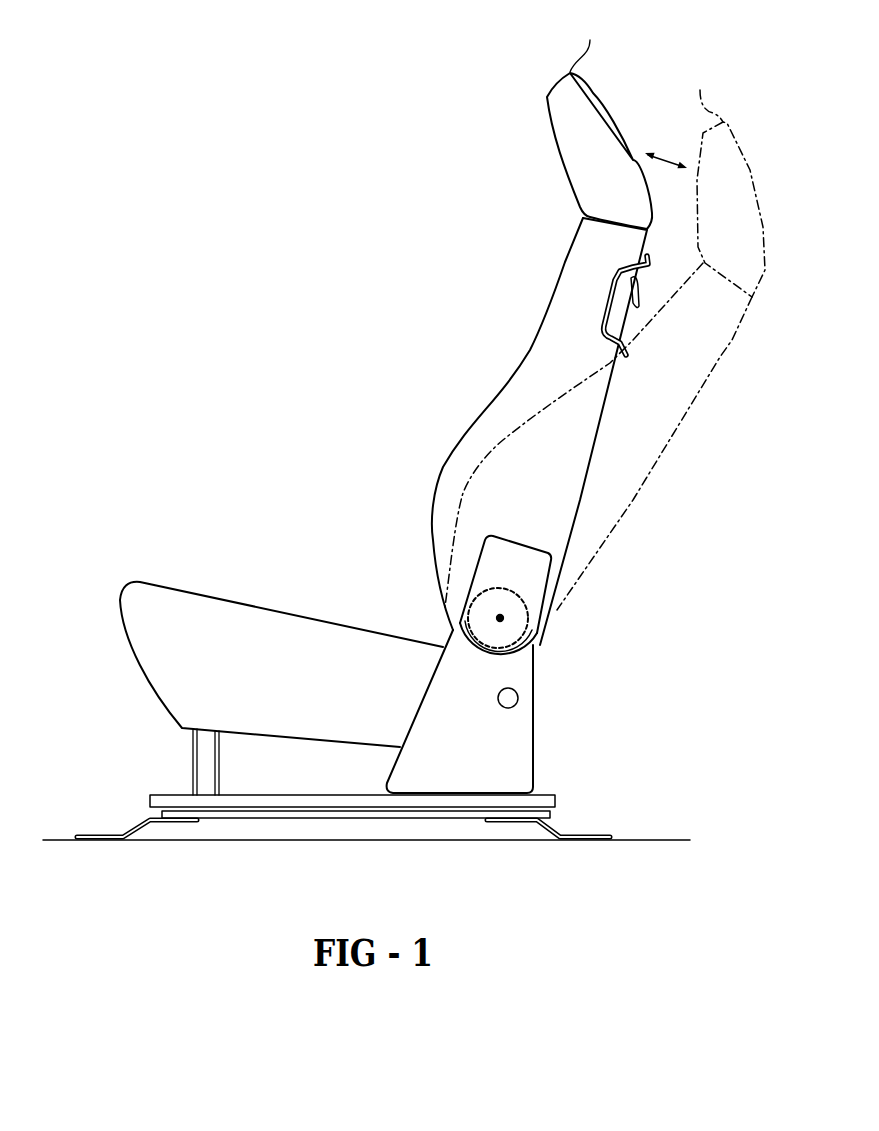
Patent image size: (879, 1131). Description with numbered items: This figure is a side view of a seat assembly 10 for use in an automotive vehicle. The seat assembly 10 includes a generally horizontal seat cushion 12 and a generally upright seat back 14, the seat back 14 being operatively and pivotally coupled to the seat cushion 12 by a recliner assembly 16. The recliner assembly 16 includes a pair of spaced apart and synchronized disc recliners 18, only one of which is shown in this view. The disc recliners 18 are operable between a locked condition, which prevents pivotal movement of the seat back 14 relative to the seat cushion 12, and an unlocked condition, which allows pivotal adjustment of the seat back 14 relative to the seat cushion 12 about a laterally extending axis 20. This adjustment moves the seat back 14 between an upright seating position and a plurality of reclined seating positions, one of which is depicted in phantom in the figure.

The seat assembly 10 is at (422, 178).
The seat cushion 12 is at (225, 598).
The seat back 14 is at (572, 243).
The recliner assembly 16 is at (525, 590).
The disc recliner 18 is at (470, 588).
The laterally extending axis 20 is at (505, 621).